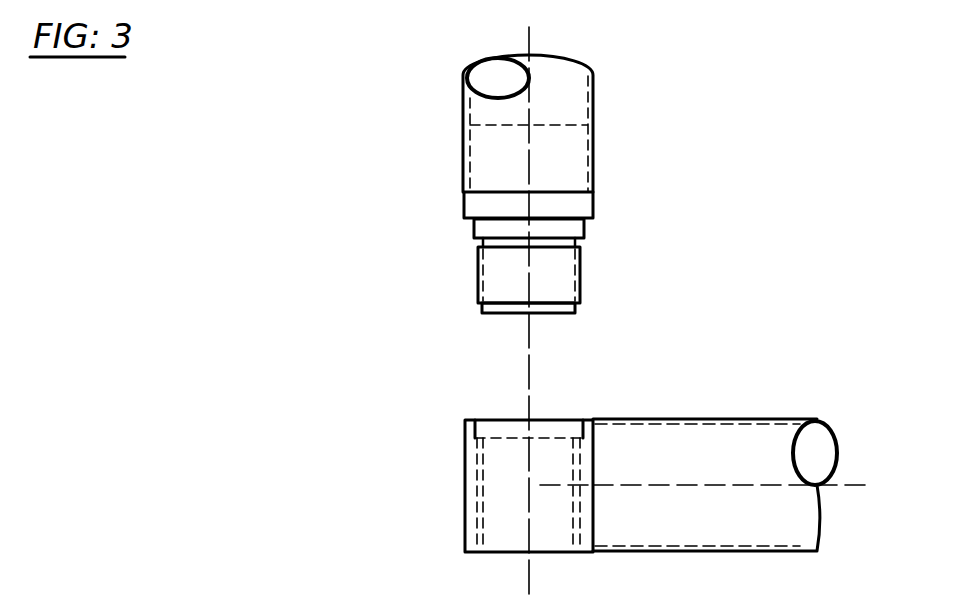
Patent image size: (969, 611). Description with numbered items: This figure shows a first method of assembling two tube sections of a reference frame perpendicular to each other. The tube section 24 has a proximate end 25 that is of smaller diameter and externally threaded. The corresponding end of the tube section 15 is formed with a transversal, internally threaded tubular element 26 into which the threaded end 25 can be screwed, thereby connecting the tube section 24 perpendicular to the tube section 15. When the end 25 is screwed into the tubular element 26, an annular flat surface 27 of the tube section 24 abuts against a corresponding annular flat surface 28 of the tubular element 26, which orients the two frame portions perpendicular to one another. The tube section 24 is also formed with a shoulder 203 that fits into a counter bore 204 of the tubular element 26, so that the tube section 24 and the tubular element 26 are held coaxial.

The tube section 24 is at (469, 113).
The annular flat surface 27 is at (470, 225).
The shoulder 203 is at (587, 233).
The proximate end 25 is at (478, 282).
The tubular element 26 is at (470, 503).
The annular flat surface 28 is at (468, 420).
The counter bore 204 is at (572, 420).
The tube section 15 is at (767, 419).